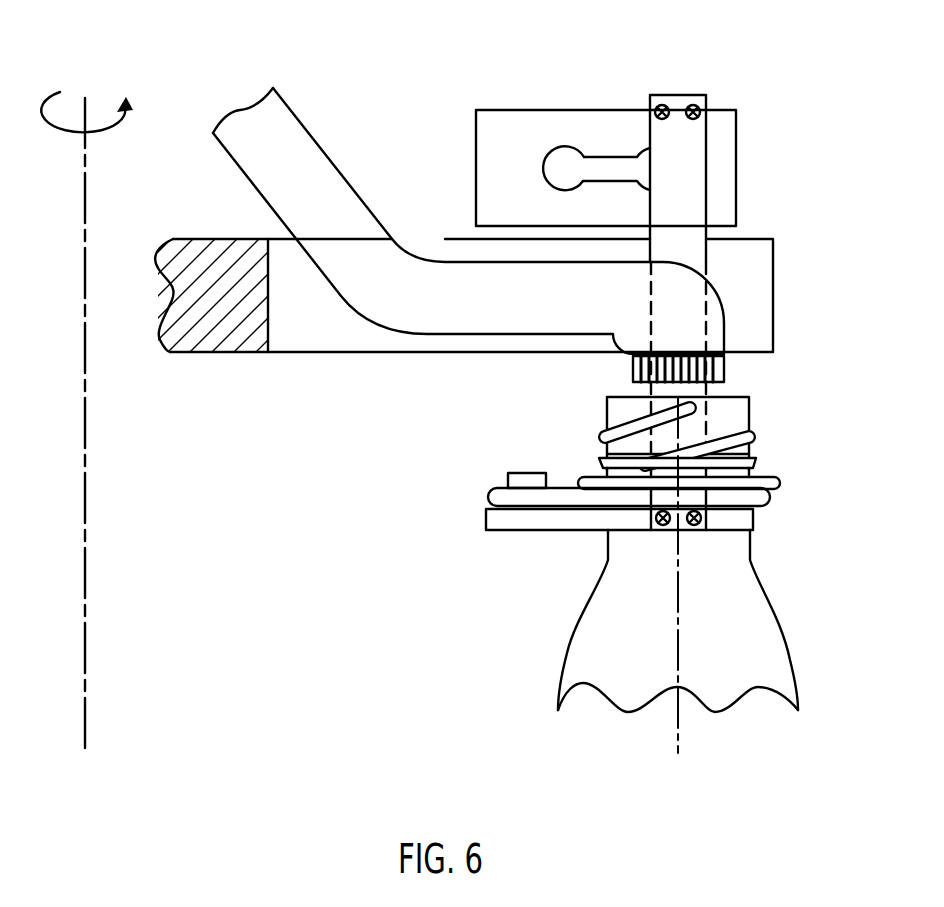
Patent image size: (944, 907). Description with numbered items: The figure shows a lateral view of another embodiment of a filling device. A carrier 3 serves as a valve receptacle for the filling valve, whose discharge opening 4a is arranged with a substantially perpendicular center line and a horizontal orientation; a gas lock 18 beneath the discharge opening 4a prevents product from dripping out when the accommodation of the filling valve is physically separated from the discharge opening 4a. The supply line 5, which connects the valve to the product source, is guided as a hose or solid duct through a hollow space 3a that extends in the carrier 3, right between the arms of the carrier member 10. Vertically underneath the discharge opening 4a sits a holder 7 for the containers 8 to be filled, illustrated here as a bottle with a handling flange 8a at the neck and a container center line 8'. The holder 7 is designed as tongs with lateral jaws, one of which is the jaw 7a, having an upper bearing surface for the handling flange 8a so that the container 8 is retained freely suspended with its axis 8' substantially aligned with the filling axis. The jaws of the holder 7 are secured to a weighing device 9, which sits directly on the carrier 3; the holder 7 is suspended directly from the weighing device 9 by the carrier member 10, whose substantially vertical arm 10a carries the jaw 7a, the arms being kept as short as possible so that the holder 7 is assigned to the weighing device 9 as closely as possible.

The carrier 3 is at (220, 343).
The hollow space 3a is at (307, 343).
The discharge opening 4a is at (717, 350).
The supply line 5 is at (325, 167).
The holder 7 is at (743, 519).
The lateral jaw 7a is at (772, 497).
The container 8 is at (688, 621).
The container center line 8' is at (698, 577).
The handling flange 8a is at (758, 478).
The weighing device 9 is at (530, 110).
The carrier member 10 is at (729, 312).
The arm 10a is at (700, 216).
The gas lock 18 is at (725, 369).